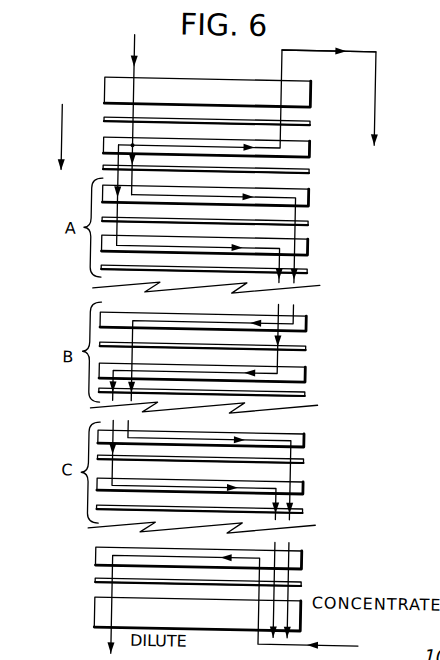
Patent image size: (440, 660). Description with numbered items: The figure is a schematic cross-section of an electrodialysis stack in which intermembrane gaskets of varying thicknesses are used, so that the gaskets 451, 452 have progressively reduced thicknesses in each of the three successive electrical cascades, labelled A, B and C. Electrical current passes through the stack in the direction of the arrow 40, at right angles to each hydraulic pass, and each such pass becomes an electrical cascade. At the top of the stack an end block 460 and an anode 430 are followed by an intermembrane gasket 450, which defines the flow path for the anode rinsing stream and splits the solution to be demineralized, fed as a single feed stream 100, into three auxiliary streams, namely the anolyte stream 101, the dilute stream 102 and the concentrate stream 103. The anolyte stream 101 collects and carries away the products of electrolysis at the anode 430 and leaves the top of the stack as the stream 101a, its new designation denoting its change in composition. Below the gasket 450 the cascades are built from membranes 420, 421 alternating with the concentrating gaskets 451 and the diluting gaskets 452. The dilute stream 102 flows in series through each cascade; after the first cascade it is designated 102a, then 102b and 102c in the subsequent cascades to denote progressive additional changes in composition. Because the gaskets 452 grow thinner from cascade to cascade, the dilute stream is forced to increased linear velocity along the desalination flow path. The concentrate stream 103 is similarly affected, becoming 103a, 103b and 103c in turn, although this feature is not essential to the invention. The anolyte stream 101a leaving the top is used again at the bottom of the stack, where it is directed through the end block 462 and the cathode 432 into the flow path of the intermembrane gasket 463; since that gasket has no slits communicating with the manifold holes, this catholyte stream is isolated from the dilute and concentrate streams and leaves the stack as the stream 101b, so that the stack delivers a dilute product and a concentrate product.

The arrow indicating direction of electrical current 40 is at (58, 134).
The feed stream 100 is at (127, 75).
The anolyte stream 101 is at (199, 128).
The anolyte stream leaving the stack 101a is at (312, 50).
The catholyte effluent stream 101b is at (210, 539).
The dilute stream 102 is at (196, 228).
The dilute stream after first cascade 102a is at (211, 356).
The dilute stream after second cascade 102b is at (214, 474).
The dilute stream after third cascade 102c is at (258, 639).
The concentrate stream 103 is at (195, 178).
The concentrate stream after first cascade 103a is at (210, 304).
The concentrate stream after second cascade 103b is at (213, 422).
The concentrate stream after third cascade 103c is at (293, 592).
The membrane 420 is at (306, 171).
The membrane 421 is at (306, 223).
The anode 430 is at (306, 123).
The cathode 432 is at (74, 583).
The intermembrane gasket 450 is at (306, 149).
The intermembrane gasket 451 is at (306, 197).
The intermembrane gasket 452 is at (306, 247).
The end block 460 is at (306, 97).
The end block 462 is at (74, 611).
The intermembrane gasket 463 is at (74, 556).